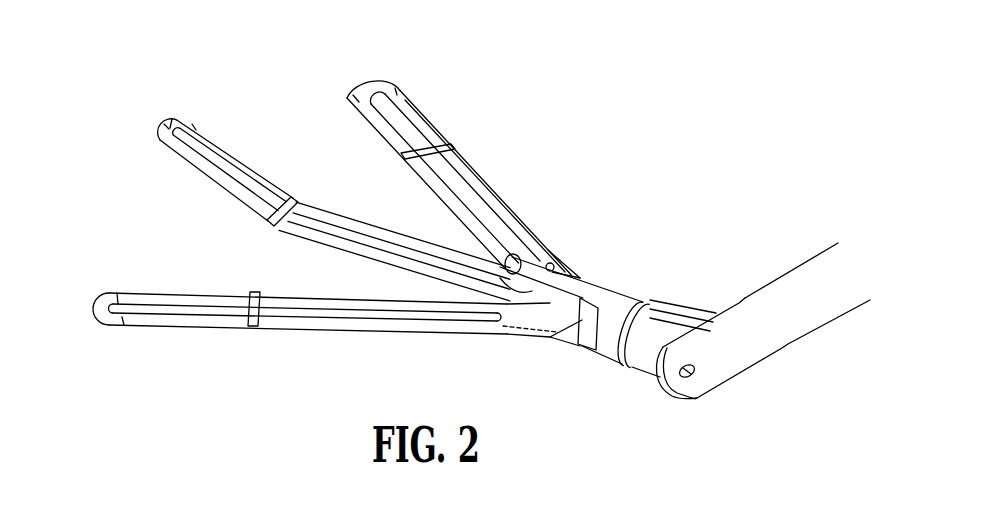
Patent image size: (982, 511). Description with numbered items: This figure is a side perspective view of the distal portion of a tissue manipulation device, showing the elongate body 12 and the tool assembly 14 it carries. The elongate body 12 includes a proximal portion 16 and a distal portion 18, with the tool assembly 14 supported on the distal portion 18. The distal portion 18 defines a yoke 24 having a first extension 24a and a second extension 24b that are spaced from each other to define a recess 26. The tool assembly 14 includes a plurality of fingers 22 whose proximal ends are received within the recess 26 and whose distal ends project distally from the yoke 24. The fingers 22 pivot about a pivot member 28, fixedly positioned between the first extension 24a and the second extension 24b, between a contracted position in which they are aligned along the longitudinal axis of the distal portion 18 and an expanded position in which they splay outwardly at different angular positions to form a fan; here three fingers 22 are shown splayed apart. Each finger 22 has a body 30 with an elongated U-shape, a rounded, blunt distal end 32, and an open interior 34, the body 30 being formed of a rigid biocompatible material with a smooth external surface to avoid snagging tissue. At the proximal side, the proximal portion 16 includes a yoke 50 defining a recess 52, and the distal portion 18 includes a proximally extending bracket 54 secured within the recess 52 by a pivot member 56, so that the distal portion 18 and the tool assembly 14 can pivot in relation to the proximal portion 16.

The elongate body 12 is at (672, 402).
The tool assembly 14 is at (531, 191).
The proximal portion 16 is at (820, 312).
The distal portion 18 is at (607, 283).
The fingers 22 is at (150, 126).
The yoke 24 is at (574, 352).
The first extension 24a is at (586, 290).
The second extension 24b is at (578, 326).
The recess 26 is at (590, 355).
The pivot member 28 is at (551, 258).
The body 30 is at (221, 146).
The distal end 32 is at (172, 116).
The open interior 34 is at (210, 156).
The yoke 50 is at (717, 310).
The recess 52 is at (741, 300).
The proximally extending bracket 54 is at (650, 330).
The pivot member 56 is at (692, 378).